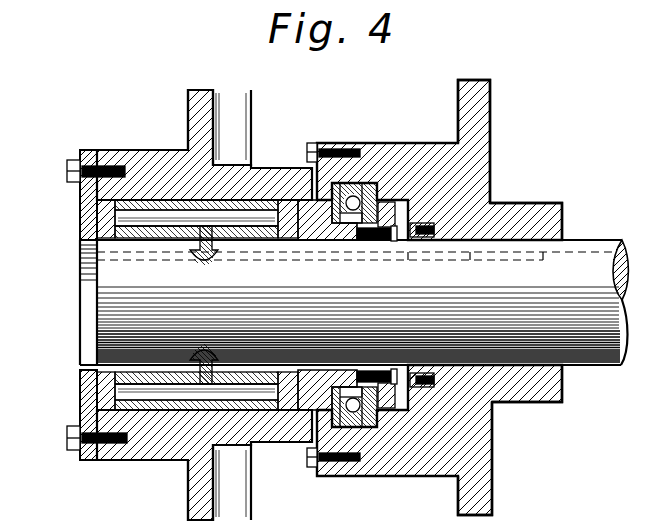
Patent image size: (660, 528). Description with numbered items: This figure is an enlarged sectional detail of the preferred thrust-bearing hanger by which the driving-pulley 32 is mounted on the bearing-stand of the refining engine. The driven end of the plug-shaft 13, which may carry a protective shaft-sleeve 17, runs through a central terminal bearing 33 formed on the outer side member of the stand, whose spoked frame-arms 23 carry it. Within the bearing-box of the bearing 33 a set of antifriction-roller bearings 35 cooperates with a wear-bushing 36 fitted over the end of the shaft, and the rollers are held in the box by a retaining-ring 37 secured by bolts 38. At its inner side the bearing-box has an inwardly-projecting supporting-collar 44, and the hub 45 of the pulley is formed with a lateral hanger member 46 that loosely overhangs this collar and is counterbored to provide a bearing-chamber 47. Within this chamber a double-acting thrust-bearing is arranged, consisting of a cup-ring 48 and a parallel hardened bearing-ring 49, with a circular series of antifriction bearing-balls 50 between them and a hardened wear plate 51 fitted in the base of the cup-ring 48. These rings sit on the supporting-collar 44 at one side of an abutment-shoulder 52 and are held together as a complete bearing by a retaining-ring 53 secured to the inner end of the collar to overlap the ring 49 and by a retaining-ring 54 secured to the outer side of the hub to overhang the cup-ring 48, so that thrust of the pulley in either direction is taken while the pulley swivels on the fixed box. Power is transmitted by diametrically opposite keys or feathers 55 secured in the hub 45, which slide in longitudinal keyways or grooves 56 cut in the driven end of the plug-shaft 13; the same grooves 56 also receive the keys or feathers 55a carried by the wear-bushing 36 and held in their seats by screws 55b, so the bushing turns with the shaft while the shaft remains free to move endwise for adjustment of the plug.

The plug-shaft 13 is at (80, 292).
The shaft-sleeve 17 is at (608, 246).
The frame-arm 23 is at (192, 92).
The driving-pulley 32 is at (488, 83).
The central terminal bearing 33 is at (204, 305).
The antifriction-roller bearings 35 is at (221, 238).
The wear-bushing 36 is at (167, 238).
The retaining-ring 37 is at (80, 222).
The bolts 38 is at (67, 175).
The supporting-collar 44 is at (327, 227).
The hub 45 is at (513, 215).
The lateral hanger member 46 is at (412, 142).
The bearing-chamber 47 is at (361, 197).
The cup-ring 48 is at (305, 445).
The bearing-ring 49 is at (336, 418).
The antifriction bearing-balls 50 is at (354, 240).
The wear plate 51 is at (338, 241).
The abutment-shoulder 52 is at (317, 237).
The retaining-ring 53 is at (380, 408).
The retaining-ring 54 is at (318, 143).
The keys or feathers 55 is at (438, 242).
The keys or feathers 55a is at (258, 270).
The screws 55b is at (182, 244).
The keyways or grooves 56 is at (214, 248).